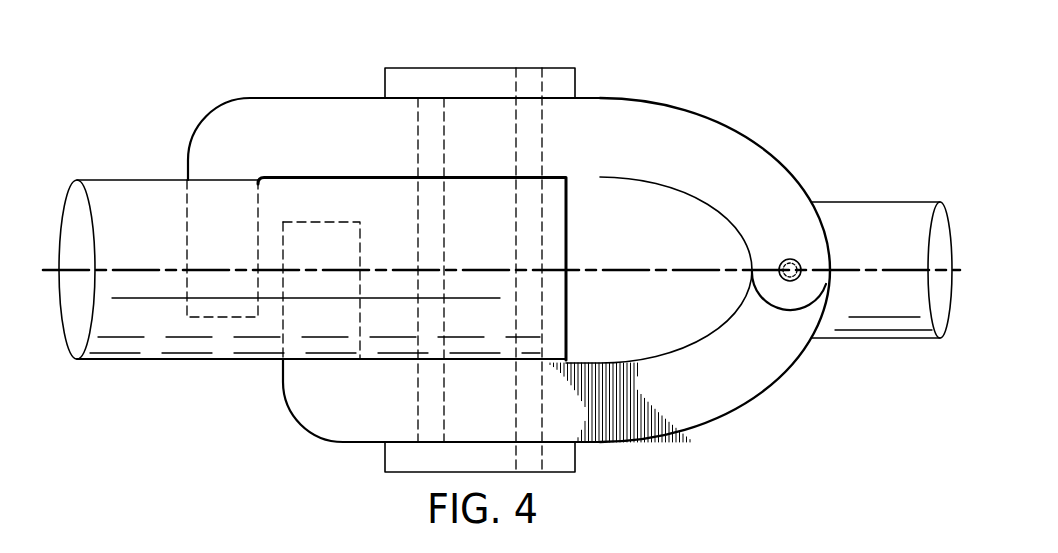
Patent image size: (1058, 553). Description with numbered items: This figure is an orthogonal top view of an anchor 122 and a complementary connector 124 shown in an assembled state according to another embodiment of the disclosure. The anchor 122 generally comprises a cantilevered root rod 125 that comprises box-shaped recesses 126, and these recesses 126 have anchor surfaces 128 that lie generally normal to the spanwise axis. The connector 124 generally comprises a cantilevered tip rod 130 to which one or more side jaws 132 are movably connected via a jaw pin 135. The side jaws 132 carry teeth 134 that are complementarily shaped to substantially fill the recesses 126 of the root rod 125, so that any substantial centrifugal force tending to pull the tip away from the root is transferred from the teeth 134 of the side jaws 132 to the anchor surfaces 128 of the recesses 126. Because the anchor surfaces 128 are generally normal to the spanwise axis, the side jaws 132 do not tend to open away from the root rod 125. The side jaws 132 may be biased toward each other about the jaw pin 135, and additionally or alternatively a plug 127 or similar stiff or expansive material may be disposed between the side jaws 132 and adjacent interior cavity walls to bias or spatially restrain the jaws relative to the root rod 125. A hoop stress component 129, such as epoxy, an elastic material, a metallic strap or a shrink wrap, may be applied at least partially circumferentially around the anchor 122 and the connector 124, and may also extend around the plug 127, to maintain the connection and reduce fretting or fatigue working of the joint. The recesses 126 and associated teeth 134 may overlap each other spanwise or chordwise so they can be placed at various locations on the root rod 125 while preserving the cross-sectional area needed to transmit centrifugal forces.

The anchor 122 is at (129, 181).
The connector 124 is at (646, 99).
The root rod 125 is at (130, 360).
The recesses 126 is at (187, 237).
The plug 127 is at (480, 67).
The anchor surfaces 128 is at (196, 190).
The hoop stress component 129 is at (418, 143).
The tip rod 130 is at (880, 210).
The side jaws 132 is at (750, 135).
The teeth 134 is at (308, 242).
The jaw pin 135 is at (790, 258).